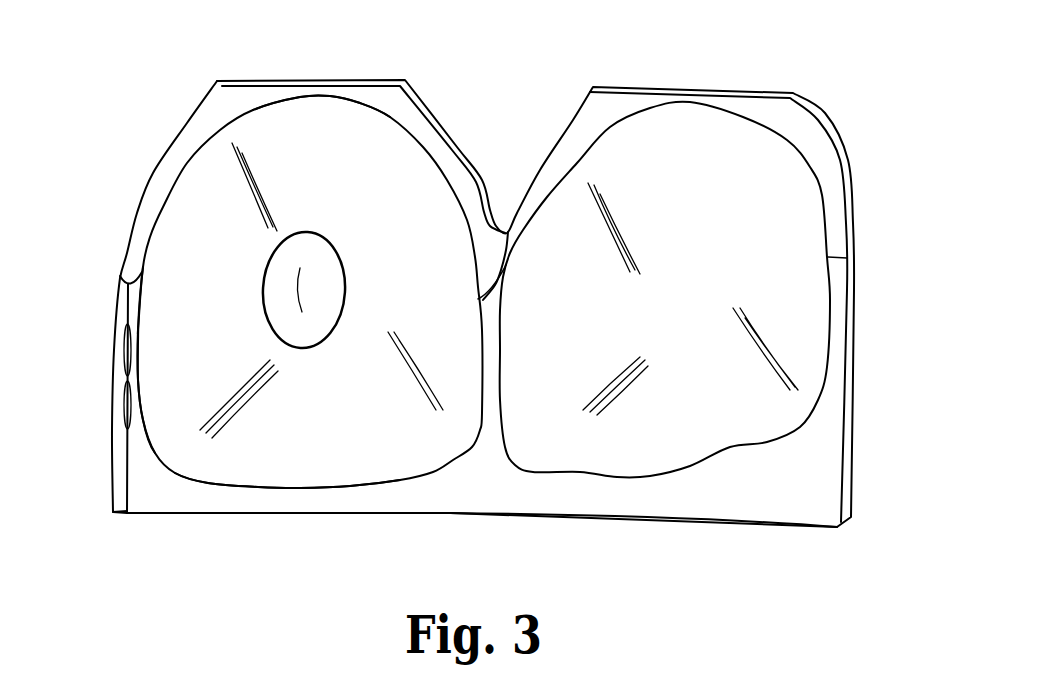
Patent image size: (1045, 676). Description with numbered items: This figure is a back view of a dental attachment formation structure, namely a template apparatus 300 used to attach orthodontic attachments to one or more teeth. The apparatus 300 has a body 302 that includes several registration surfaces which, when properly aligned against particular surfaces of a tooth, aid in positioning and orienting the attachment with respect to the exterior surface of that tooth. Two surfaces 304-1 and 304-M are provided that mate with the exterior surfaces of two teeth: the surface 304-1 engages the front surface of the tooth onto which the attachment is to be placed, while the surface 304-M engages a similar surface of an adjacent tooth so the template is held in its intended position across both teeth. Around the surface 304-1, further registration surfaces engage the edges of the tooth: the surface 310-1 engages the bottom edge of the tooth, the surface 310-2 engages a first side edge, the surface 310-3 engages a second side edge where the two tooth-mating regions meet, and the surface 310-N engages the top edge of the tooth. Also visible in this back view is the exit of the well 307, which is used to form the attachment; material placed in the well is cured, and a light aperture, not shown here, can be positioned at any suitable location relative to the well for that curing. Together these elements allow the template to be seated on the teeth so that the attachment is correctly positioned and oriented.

The apparatus 300 is at (159, 99).
The body 302 is at (121, 332).
The surface 304-1 is at (352, 440).
The surface 304-M is at (788, 200).
The well 307 is at (273, 250).
The surface 310-1 is at (253, 488).
The first side edge surface 310-2 is at (143, 387).
The second side edge surface 310-3 is at (508, 228).
The top edge surface 310-N is at (320, 96).